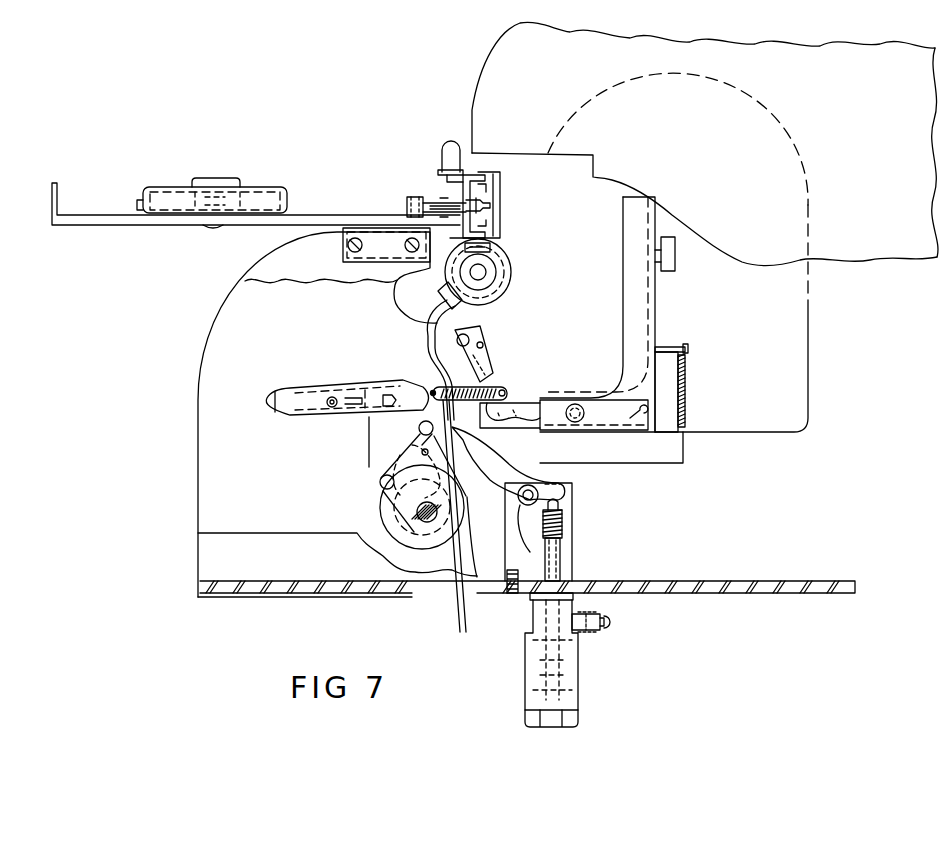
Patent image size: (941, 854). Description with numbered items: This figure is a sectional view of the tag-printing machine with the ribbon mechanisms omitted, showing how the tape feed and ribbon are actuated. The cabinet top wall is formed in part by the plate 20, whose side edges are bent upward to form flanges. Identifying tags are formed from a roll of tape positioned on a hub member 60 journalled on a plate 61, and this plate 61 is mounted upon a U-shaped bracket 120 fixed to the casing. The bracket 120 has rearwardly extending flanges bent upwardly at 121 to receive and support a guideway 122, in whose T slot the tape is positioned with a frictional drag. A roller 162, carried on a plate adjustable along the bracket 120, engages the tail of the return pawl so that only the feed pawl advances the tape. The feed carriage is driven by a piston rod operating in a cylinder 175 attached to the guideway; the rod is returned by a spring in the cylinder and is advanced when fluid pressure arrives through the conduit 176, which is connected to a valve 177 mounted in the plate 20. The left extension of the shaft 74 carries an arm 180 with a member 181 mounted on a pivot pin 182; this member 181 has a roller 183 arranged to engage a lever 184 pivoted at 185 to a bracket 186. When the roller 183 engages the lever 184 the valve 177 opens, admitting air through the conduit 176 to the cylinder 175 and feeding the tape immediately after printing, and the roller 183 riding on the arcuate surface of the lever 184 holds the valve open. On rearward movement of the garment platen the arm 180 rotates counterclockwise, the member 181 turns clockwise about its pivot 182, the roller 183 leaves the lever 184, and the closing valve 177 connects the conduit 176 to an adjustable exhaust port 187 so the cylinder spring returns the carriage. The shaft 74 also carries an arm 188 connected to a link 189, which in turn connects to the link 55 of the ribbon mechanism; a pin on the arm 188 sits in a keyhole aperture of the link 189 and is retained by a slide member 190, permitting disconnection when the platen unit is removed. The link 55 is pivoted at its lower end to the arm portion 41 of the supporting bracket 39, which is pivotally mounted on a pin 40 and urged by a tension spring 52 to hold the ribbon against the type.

The plate 20 is at (692, 587).
The supporting bracket 39 is at (657, 348).
The pin 40 is at (594, 415).
The arm portion 41 is at (510, 428).
The tension spring 52 is at (694, 384).
The link 55 is at (487, 361).
The hub member 60 is at (283, 202).
The plate 61 is at (67, 217).
The shaft 74 is at (424, 523).
The U-shaped bracket 120 is at (372, 228).
The upwardly bent flanges 121 is at (497, 207).
The guideway 122 is at (490, 222).
The roller 162 is at (415, 197).
The cylinder 175 is at (511, 268).
The conduit 176 is at (466, 630).
The valve 177 is at (582, 657).
The arm 180 is at (508, 463).
The member 181 is at (380, 484).
The pivot pin 182 is at (422, 497).
The roller 183 is at (419, 430).
The lever 184 is at (503, 445).
The pivot 185 is at (519, 498).
The bracket 186 is at (517, 548).
The adjustable exhaust port 187 is at (598, 610).
The arm 188 is at (378, 471).
The link 189 is at (433, 388).
The slide member 190 is at (316, 395).